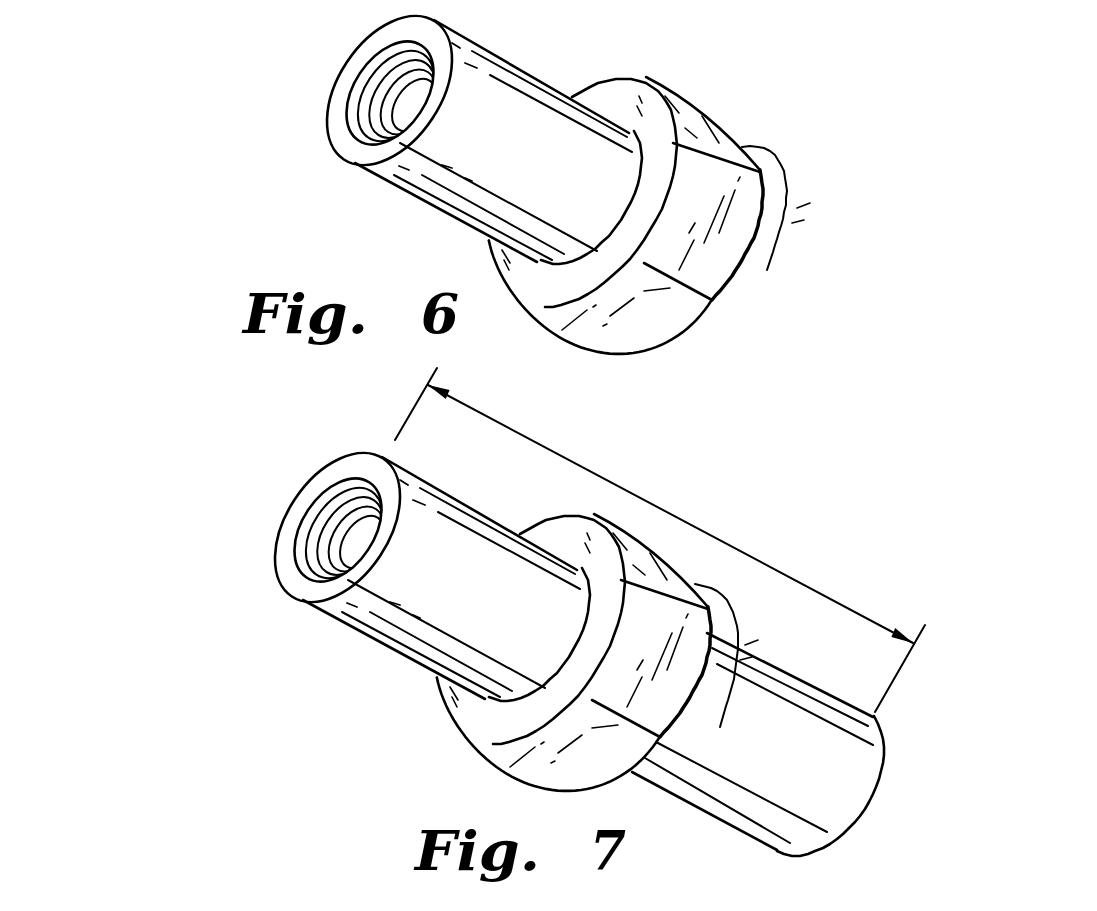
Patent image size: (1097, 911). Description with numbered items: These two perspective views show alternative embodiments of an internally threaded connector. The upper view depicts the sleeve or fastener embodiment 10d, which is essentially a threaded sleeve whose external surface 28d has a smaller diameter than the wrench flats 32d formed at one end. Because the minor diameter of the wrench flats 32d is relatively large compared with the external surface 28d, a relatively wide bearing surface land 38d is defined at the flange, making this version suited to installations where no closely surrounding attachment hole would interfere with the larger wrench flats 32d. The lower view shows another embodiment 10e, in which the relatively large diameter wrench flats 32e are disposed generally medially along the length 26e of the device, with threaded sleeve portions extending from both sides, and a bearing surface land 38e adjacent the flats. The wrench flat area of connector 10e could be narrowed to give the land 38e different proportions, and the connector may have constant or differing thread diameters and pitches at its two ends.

In FIG. 6, the internally threaded connector embodiment 10d is at (228, 133).
In FIG. 6, the external surface 28d is at (457, 180).
In FIG. 6, the bearing surface land 38d is at (602, 93).
In FIG. 6, the wrench flats 32d is at (713, 307).
In FIG. 7, the internally threaded connector embodiment 10e is at (195, 672).
In FIG. 7, the length 26e is at (668, 518).
In FIG. 7, the bearing surface land 38e is at (480, 713).
In FIG. 7, the wrench flats 32e is at (632, 742).